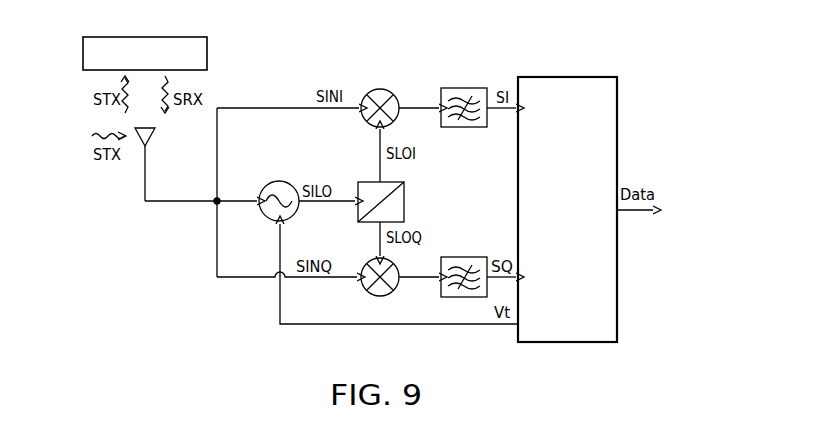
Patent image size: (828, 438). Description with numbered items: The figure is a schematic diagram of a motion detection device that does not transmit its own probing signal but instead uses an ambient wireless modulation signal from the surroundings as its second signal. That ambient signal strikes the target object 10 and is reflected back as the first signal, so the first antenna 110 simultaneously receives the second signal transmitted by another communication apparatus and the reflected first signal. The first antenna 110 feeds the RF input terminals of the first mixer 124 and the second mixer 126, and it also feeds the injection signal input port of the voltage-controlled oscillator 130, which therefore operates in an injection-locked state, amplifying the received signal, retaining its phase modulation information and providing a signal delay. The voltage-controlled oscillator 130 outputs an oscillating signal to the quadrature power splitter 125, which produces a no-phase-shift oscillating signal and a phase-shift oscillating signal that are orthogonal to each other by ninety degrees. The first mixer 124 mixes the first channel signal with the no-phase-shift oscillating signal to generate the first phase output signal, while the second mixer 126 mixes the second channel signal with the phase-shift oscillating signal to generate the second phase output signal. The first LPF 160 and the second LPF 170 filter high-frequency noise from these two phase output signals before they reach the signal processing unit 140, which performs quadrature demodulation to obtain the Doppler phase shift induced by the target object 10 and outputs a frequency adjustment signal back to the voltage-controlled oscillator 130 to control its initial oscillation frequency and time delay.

The target object 10 is at (209, 53).
The first antenna 110 is at (156, 135).
The voltage-controlled oscillator 130 is at (296, 216).
The quadrature power splitter 125 is at (362, 181).
The first mixer 124 is at (397, 92).
The second mixer 126 is at (368, 263).
The first LPF 160 is at (467, 86).
The second LPF 170 is at (469, 256).
The signal processing unit 140 is at (561, 76).